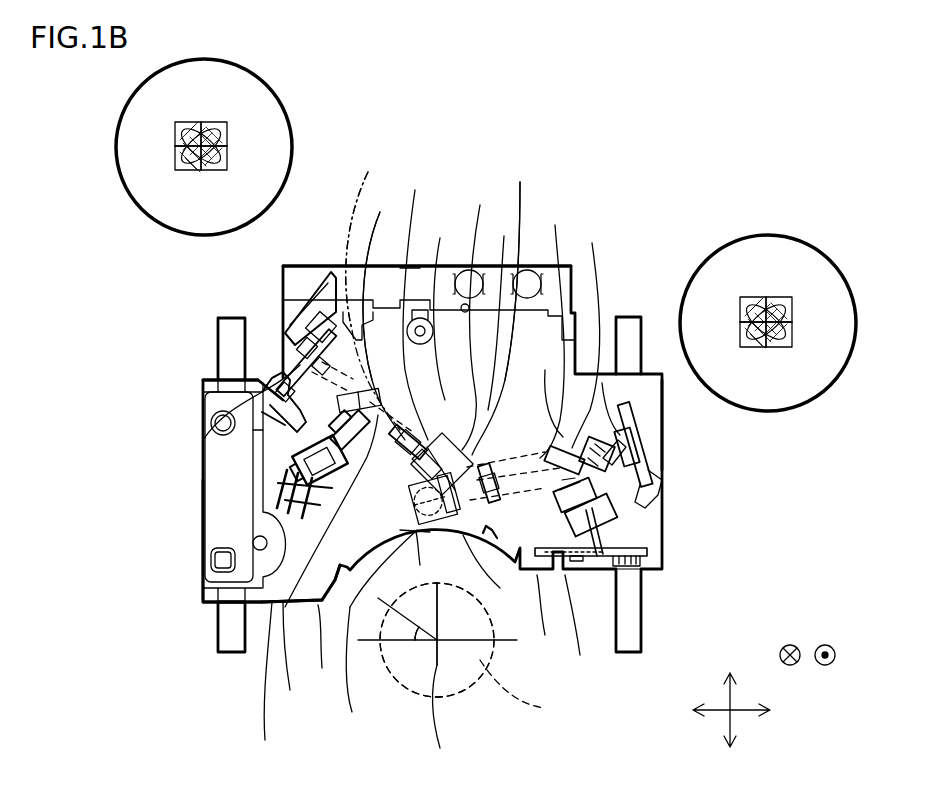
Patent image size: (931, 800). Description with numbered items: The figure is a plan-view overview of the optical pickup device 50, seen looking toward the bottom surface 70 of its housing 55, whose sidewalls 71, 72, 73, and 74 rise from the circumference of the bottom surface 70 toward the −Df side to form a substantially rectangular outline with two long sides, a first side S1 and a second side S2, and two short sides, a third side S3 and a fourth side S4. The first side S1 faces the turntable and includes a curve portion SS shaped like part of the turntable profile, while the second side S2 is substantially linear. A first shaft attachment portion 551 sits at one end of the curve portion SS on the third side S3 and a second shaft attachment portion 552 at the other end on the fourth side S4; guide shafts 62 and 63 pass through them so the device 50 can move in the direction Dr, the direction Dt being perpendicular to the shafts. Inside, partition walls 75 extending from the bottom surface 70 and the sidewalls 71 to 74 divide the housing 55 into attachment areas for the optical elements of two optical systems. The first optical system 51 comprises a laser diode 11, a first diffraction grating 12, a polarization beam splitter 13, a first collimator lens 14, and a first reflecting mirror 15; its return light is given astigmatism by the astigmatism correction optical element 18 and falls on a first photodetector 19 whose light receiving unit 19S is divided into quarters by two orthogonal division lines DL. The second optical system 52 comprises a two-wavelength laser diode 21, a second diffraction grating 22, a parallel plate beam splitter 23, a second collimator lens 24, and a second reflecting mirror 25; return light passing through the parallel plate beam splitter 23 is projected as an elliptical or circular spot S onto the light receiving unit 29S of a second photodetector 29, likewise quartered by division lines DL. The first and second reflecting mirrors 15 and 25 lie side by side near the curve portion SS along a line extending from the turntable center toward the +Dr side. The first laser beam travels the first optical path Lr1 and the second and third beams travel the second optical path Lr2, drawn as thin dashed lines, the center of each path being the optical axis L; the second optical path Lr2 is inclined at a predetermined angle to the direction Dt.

The laser diode 11 is at (656, 556).
The first diffraction grating 12 is at (585, 470).
The polarization beam splitter 13 is at (598, 282).
The first collimator lens 14 is at (506, 265).
The first reflecting mirror 15 is at (350, 607).
The astigmatism correction optical element 18 is at (645, 317).
The first photodetector 19 is at (668, 452).
The light receiving unit 19S is at (792, 305).
The two-wavelength laser diode 21 is at (300, 450).
The second diffraction grating 22 is at (281, 382).
The parallel plate beam splitter 23 is at (328, 300).
The second collimator lens 24 is at (405, 265).
The second reflecting mirror 25 is at (444, 265).
The second photodetector 29 is at (297, 298).
The light receiving unit 29S is at (225, 132).
The optical pickup device 50 is at (688, 182).
The first optical system 51 is at (566, 578).
The second optical system 52 is at (283, 604).
The housing 55 is at (562, 265).
The guide shaft 62 is at (232, 640).
The guide shaft 63 is at (648, 606).
The bottom surface 70 is at (272, 604).
The sidewall 71 is at (463, 535).
The sidewall 72 is at (487, 265).
The sidewall 73 is at (203, 540).
The sidewall 74 is at (665, 440).
The partition wall 75 is at (652, 497).
The first shaft attachment portion 551 is at (212, 405).
The second shaft attachment portion 552 is at (672, 362).
The optical axis L is at (545, 635).
The first optical path Lr1 is at (520, 268).
The second optical path Lr2 is at (384, 283).
The spot S is at (190, 170).
The division line DL is at (213, 172).
The first side S1 is at (318, 605).
The second side S2 is at (404, 268).
The third side S3 is at (203, 445).
The fourth side S4 is at (668, 468).
The curve portion SS is at (416, 532).
The direction Dr is at (737, 716).
The direction Dt is at (727, 717).
The direction Df is at (817, 670).